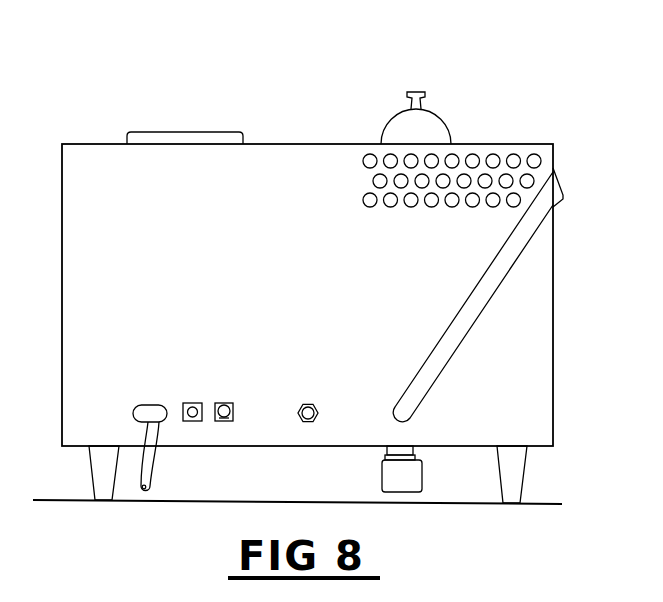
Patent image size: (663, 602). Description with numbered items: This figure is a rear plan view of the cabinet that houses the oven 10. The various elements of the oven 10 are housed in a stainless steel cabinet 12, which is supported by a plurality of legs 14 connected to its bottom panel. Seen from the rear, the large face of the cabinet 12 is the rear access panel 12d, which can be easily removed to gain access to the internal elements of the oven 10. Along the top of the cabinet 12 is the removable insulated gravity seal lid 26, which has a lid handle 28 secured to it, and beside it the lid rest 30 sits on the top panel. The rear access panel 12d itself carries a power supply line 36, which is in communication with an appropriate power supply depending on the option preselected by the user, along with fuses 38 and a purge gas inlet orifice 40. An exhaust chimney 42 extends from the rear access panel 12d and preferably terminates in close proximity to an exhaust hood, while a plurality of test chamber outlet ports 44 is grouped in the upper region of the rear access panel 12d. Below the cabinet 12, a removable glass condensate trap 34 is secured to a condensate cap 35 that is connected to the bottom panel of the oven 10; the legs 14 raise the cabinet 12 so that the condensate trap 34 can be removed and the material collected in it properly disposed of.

The oven 10 is at (526, 127).
The cabinet 12 is at (554, 303).
The rear access panel 12d is at (288, 278).
The legs 14 is at (89, 463).
The gravity seal lid 26 is at (388, 124).
The lid handle 28 is at (426, 96).
The lid rest 30 is at (243, 143).
The condensate trap 34 is at (380, 481).
The condensate cap 35 is at (414, 458).
The power supply line 36 is at (158, 448).
The fuses 38 is at (222, 403).
The purge gas inlet orifice 40 is at (306, 403).
The exhaust chimney 42 is at (483, 271).
The test chamber outlet ports 44 is at (386, 206).